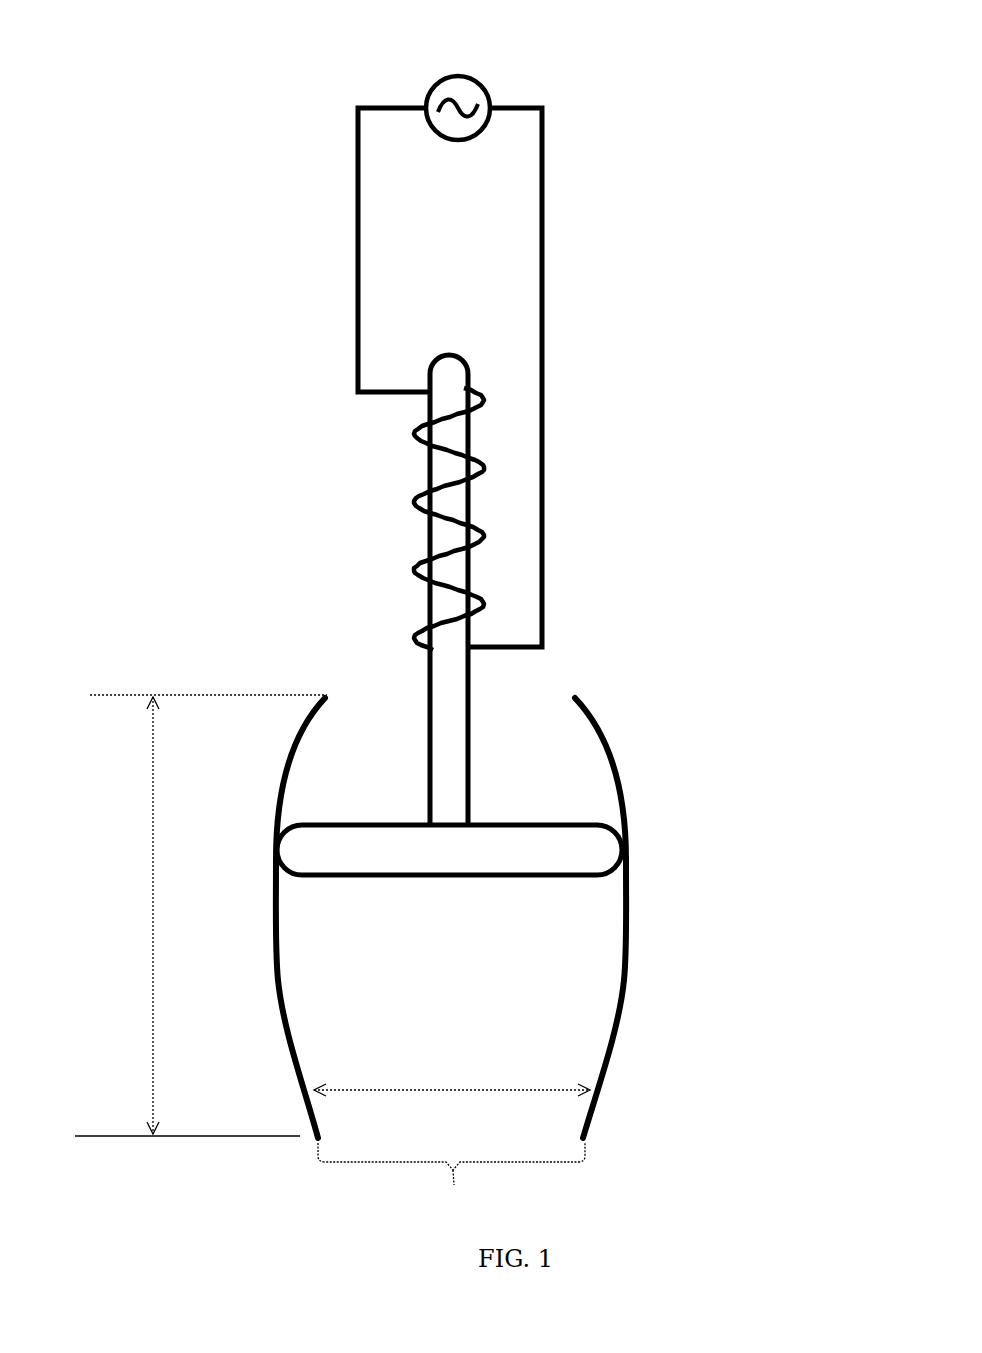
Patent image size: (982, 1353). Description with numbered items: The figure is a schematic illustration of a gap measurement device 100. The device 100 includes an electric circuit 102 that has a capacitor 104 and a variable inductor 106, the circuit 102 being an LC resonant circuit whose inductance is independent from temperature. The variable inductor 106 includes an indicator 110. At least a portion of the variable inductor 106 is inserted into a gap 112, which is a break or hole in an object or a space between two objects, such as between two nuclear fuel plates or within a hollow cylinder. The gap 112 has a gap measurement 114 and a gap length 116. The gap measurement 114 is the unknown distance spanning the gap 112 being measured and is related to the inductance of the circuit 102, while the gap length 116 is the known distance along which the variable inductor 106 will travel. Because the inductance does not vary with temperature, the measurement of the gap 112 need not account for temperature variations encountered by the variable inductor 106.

The gap measurement device 100 is at (104, 38).
The electric circuit 102 is at (354, 218).
The capacitor 104 is at (466, 72).
The variable inductor 106 is at (448, 356).
The indicator 110 is at (450, 878).
The gap 112 is at (451, 1181).
The gap measurement 114 is at (452, 1086).
The gap length 116 is at (152, 940).